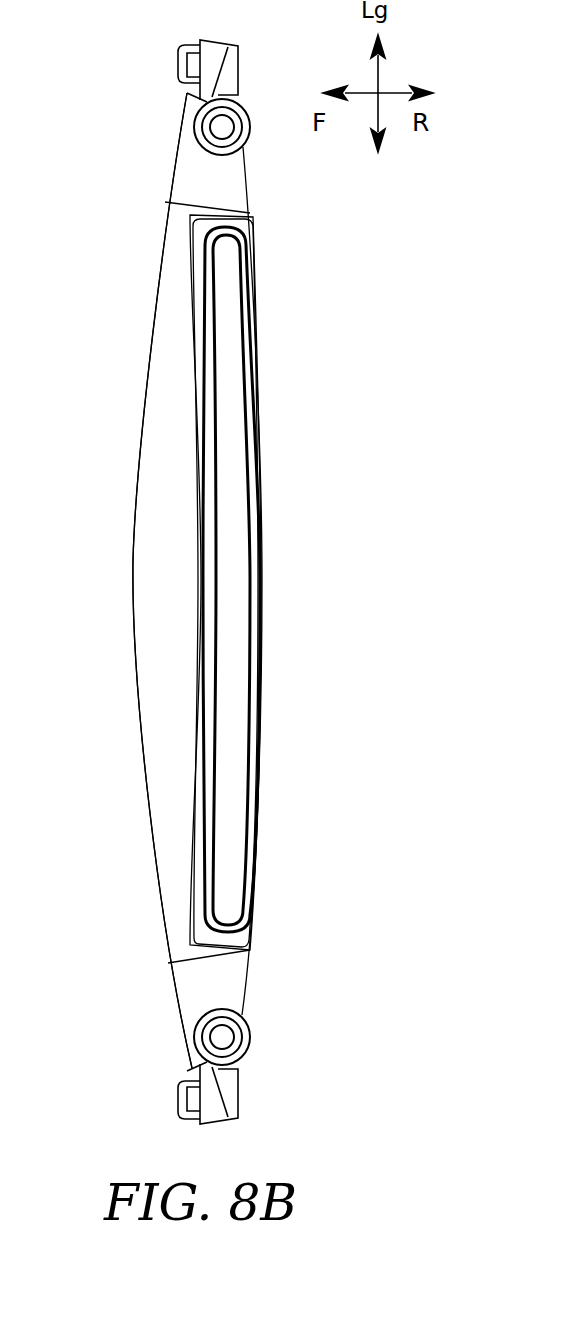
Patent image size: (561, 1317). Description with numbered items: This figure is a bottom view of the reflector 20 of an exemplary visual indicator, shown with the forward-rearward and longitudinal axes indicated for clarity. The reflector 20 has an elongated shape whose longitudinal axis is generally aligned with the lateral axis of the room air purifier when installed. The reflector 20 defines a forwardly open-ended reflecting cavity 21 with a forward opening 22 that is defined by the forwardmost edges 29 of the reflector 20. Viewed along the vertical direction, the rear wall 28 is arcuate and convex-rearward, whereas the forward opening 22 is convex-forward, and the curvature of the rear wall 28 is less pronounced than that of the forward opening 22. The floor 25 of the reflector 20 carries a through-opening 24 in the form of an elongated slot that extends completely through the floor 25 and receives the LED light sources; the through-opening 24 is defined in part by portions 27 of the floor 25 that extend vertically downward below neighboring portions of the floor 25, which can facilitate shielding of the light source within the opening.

The reflector 20 is at (163, 690).
The reflecting cavity 21 is at (175, 433).
The forward opening 22 is at (122, 543).
The through-opening 24 is at (233, 735).
The floor 25 is at (160, 767).
The portions of floor 27 is at (253, 378).
The rear wall 28 is at (263, 573).
The forwardmost edges 29 is at (133, 620).